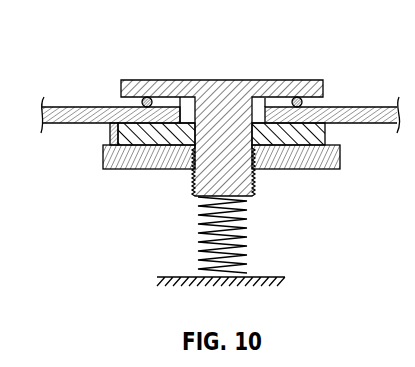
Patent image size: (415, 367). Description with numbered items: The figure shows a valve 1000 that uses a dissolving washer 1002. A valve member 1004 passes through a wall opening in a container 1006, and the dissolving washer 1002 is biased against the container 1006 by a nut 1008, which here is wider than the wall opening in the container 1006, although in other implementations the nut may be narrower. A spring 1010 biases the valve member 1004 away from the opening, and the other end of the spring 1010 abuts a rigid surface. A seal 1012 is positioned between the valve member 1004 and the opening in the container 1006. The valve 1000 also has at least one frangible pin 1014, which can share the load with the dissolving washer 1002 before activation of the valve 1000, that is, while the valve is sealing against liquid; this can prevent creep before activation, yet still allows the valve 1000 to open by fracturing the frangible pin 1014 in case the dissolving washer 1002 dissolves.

The valve 1000 is at (103, 32).
The dissolving washer 1002 is at (325, 130).
The valve member 1004 is at (222, 80).
The container 1006 is at (372, 107).
The nut 1008 is at (297, 169).
The spring 1010 is at (248, 240).
The seal 1012 is at (302, 101).
The frangible pin 1014 is at (110, 131).